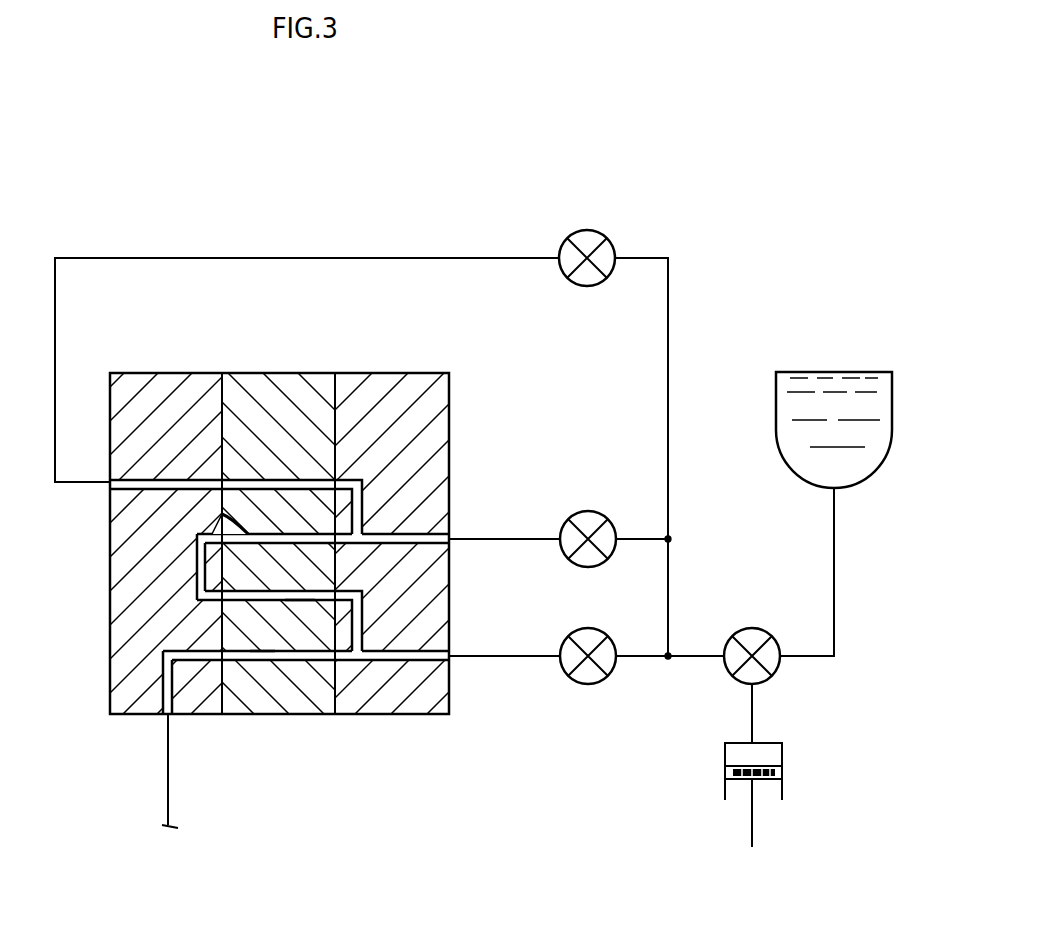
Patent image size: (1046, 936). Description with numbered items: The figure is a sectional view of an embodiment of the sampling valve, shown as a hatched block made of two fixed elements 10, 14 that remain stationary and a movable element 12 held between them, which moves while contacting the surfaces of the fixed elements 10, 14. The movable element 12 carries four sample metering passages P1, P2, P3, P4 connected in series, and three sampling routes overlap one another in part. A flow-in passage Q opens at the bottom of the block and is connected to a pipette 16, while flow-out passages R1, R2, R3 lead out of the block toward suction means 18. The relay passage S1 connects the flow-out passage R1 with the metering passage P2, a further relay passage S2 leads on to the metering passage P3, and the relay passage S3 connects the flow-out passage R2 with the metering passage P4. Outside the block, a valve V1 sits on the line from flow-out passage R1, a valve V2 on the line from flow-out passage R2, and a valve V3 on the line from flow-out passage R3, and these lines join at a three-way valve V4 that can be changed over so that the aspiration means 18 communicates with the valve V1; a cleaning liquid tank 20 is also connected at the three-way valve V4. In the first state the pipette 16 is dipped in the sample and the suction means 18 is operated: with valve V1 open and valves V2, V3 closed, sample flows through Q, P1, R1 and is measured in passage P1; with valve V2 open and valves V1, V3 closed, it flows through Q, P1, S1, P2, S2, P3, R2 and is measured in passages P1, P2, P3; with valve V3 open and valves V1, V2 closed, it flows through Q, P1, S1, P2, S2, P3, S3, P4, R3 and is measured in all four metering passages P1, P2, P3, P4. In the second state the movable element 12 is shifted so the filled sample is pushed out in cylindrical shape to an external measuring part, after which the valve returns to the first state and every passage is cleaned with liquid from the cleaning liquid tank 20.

The fixed element 10 is at (163, 373).
The movable element 12 is at (298, 372).
The fixed element 14 is at (398, 372).
The pipette 16 is at (168, 772).
The suction means 18 is at (782, 745).
The cleaning liquid tank 20 is at (823, 372).
The valve V1 is at (593, 685).
The valve V2 is at (590, 511).
The valve V3 is at (603, 232).
The three-way valve V4 is at (753, 628).
The metering passage P1 is at (260, 660).
The metering passage P2 is at (298, 600).
The metering passage P3 is at (222, 515).
The metering passage P4 is at (270, 480).
The flow-out passage R1 is at (407, 660).
The flow-out passage R2 is at (403, 538).
The flow-out passage R3 is at (147, 487).
The relay passage S1 is at (362, 628).
The relay passage S2 is at (195, 575).
The relay passage S3 is at (358, 503).
The flow-in passage Q is at (165, 690).